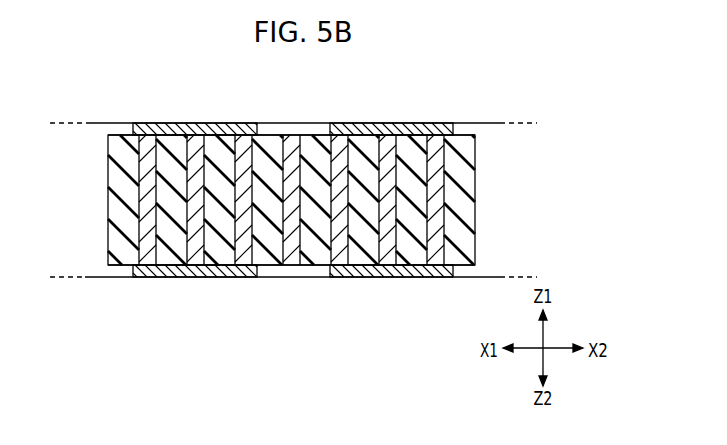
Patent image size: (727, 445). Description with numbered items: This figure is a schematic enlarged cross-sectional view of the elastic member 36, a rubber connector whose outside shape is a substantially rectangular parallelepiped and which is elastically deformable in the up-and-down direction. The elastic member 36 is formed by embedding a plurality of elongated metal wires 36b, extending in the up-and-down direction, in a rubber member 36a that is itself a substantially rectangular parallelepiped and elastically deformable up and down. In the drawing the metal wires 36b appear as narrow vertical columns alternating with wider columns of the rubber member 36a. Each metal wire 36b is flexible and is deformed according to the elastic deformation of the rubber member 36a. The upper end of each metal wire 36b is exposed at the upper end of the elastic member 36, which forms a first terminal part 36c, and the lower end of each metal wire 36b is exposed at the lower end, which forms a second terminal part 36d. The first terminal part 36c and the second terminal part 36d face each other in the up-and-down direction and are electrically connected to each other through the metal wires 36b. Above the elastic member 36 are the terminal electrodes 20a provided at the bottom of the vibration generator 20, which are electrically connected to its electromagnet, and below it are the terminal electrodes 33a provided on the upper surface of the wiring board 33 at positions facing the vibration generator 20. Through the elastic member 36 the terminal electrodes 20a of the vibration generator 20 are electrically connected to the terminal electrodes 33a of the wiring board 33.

The elastic member 36 is at (316, 190).
The rubber member 36a is at (470, 216).
The metal wires 36b is at (292, 142).
The first terminal part 36c is at (463, 137).
The second terminal part 36d is at (460, 270).
The terminal electrodes 20a is at (403, 130).
The vibration generator 20 is at (296, 109).
The terminal electrodes 33a is at (400, 270).
The wiring board 33 is at (293, 298).